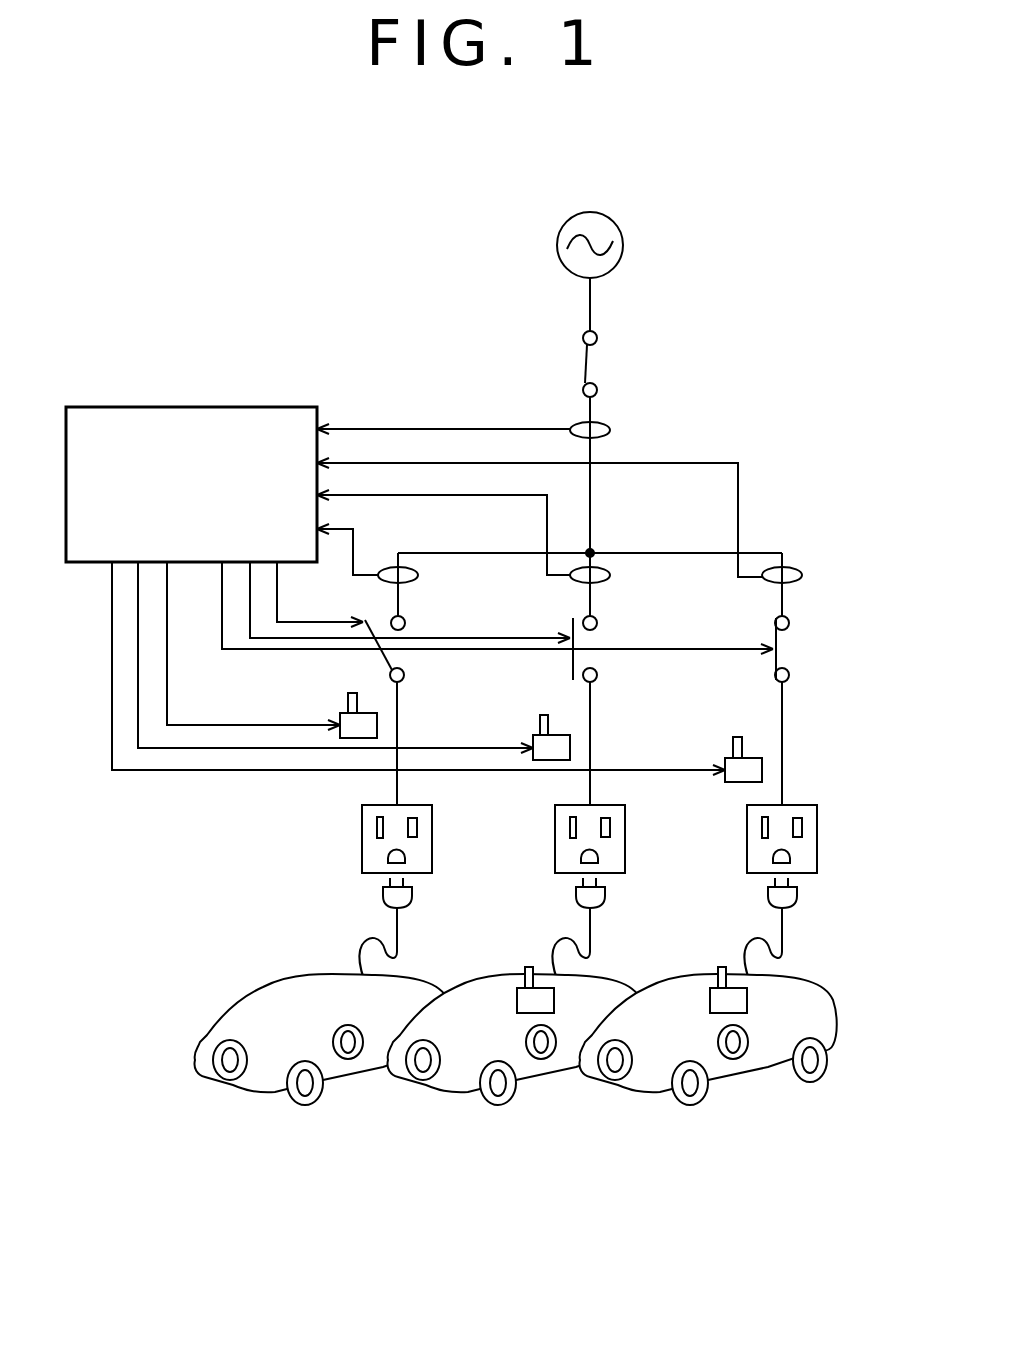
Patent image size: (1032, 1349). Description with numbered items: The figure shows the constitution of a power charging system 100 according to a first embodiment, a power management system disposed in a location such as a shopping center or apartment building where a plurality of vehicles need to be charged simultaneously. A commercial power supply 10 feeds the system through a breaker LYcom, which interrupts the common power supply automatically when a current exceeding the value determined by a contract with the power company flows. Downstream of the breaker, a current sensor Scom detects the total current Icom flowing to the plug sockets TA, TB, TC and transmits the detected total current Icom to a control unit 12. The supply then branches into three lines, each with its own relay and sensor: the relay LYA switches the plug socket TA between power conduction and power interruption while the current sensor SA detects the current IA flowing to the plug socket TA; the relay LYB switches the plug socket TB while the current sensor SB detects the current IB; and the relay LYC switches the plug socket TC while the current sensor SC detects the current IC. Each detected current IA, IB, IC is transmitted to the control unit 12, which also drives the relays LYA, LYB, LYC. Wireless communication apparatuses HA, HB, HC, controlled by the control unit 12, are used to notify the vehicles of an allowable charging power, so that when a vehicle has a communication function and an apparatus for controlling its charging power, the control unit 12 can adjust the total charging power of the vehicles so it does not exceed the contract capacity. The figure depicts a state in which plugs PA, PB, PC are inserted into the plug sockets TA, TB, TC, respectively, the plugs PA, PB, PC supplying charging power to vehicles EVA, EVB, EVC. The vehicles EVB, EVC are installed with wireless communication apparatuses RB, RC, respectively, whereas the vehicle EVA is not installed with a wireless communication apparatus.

The power charging system 100 is at (195, 323).
The control unit 12 is at (232, 407).
The commercial power supply 10 is at (602, 215).
The breaker LYcom is at (593, 362).
The current sensor Scom is at (612, 432).
The total current Icom is at (443, 416).
The current IA is at (350, 549).
The current IB is at (443, 532).
The current IC is at (539, 517).
The current sensor SA is at (407, 580).
The current sensor SB is at (603, 580).
The current sensor SC is at (797, 580).
The relay LYA is at (405, 663).
The relay LYB is at (595, 660).
The relay LYC is at (788, 660).
The wireless communication apparatus HA is at (345, 710).
The wireless communication apparatus HB is at (537, 733).
The wireless communication apparatus HC is at (727, 757).
The plug socket TA is at (362, 837).
The plug socket TB is at (555, 837).
The plug socket TC is at (747, 837).
The plug PA is at (412, 897).
The plug PB is at (605, 897).
The plug PC is at (797, 897).
The wireless communication apparatus RB is at (517, 1000).
The wireless communication apparatus RC is at (710, 1000).
The vehicle EVA is at (242, 1092).
The vehicle EVB is at (435, 1093).
The vehicle EVC is at (628, 1092).